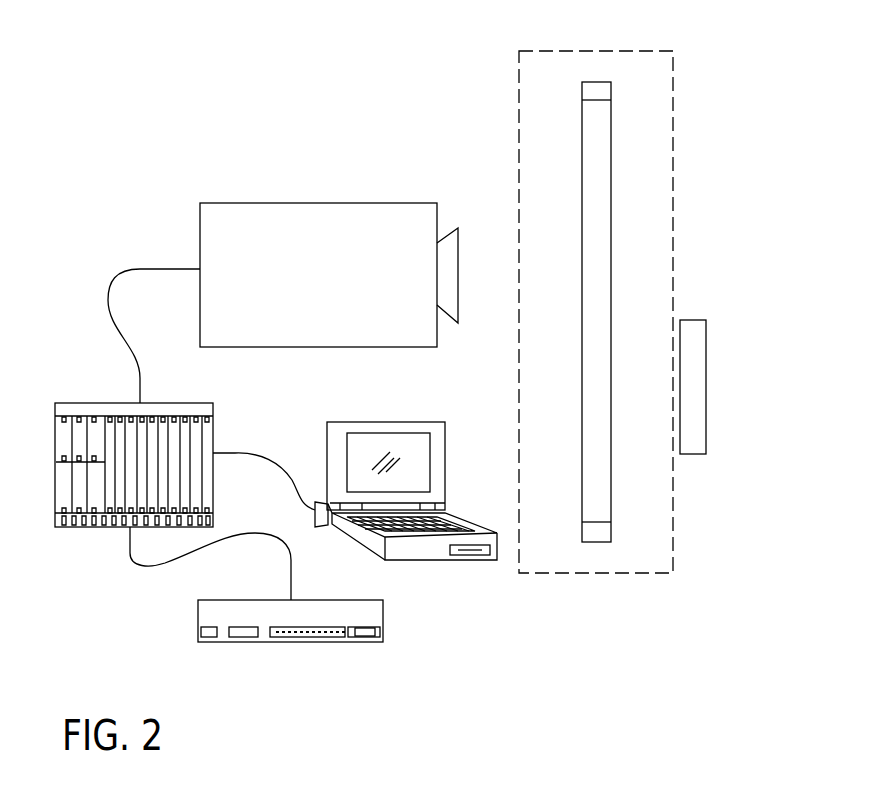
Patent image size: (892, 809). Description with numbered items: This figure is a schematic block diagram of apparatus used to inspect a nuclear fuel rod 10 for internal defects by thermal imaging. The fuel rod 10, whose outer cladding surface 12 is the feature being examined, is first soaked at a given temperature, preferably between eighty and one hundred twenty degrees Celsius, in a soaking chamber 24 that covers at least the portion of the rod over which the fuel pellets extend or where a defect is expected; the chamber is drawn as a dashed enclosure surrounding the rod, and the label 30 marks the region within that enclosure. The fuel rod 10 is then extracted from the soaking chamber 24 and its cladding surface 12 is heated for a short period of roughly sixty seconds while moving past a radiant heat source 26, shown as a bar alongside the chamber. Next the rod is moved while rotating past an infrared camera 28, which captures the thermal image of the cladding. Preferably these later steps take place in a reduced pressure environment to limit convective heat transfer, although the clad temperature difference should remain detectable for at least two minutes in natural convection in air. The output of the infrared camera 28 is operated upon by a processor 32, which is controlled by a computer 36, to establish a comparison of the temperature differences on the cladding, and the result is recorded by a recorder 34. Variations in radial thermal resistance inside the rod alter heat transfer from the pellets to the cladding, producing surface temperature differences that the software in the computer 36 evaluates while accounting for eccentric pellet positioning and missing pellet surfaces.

The fuel rod 10 is at (621, 133).
The cladding surface 12 is at (611, 372).
The soaking chamber 24 is at (572, 51).
The radiant heat source 26 is at (706, 350).
The infrared camera 28 is at (330, 203).
The panel surface 30 is at (643, 178).
The processor 32 is at (165, 403).
The recorder 34 is at (272, 642).
The computer 36 is at (385, 421).